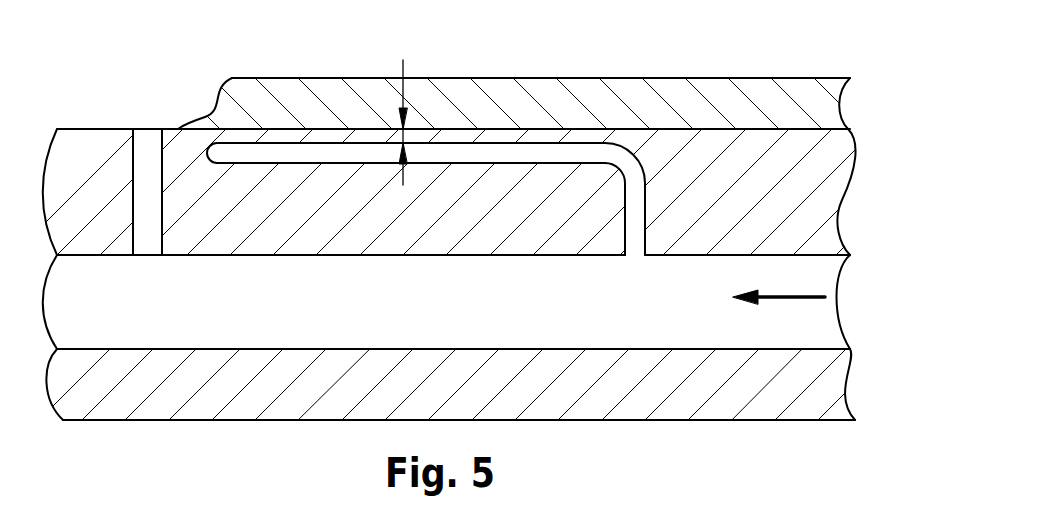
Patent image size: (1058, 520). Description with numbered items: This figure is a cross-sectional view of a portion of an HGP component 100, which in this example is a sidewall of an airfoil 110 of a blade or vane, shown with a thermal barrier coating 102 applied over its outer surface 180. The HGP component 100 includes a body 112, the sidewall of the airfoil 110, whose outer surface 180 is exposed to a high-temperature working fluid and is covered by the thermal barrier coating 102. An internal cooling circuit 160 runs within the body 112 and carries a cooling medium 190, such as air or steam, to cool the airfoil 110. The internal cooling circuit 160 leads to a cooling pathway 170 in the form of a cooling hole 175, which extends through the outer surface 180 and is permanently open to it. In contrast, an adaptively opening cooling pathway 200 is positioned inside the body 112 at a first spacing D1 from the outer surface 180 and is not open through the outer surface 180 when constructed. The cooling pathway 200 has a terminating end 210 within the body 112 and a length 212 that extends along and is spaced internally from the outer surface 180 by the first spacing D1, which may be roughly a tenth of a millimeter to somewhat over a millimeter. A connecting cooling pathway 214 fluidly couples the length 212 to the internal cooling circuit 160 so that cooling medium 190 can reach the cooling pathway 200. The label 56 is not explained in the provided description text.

The airfoil component 56 is at (467, 22).
The HGP component 100 is at (858, 107).
The thermal barrier coating 102 is at (800, 87).
The airfoil 110 is at (816, 168).
The body 112 is at (509, 249).
The internal cooling circuit 160 is at (677, 307).
The cooling pathway 170 is at (151, 142).
The cooling hole 175 is at (147, 248).
The outer surface 180 is at (310, 127).
The cooling medium 190 is at (797, 295).
The cooling pathway 200 is at (585, 136).
The terminating end 210 is at (232, 157).
The length 212 is at (505, 152).
The connecting cooling pathway 214 is at (635, 243).
The first spacing D1 is at (404, 107).